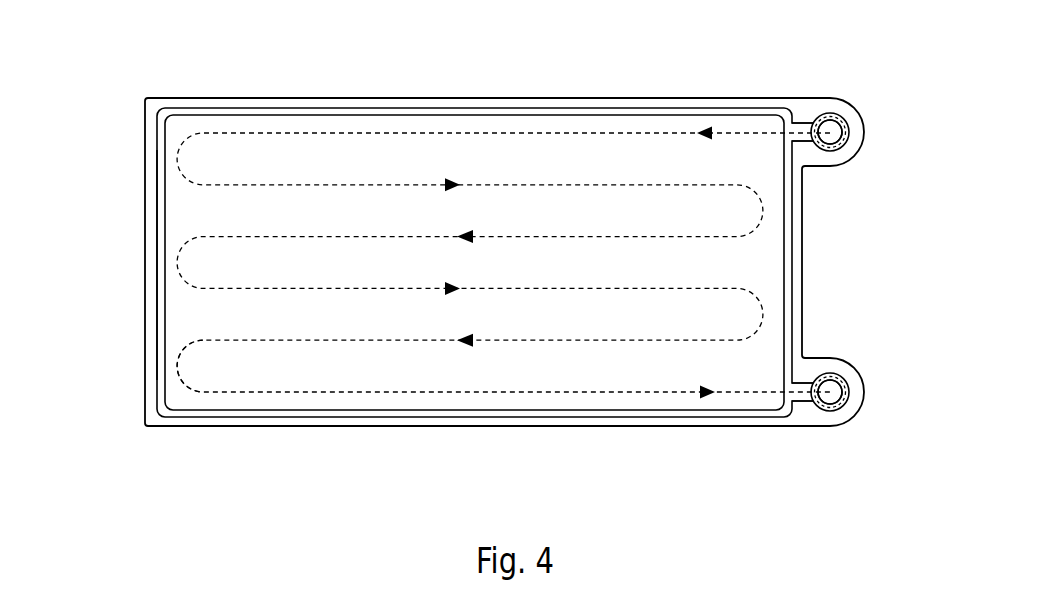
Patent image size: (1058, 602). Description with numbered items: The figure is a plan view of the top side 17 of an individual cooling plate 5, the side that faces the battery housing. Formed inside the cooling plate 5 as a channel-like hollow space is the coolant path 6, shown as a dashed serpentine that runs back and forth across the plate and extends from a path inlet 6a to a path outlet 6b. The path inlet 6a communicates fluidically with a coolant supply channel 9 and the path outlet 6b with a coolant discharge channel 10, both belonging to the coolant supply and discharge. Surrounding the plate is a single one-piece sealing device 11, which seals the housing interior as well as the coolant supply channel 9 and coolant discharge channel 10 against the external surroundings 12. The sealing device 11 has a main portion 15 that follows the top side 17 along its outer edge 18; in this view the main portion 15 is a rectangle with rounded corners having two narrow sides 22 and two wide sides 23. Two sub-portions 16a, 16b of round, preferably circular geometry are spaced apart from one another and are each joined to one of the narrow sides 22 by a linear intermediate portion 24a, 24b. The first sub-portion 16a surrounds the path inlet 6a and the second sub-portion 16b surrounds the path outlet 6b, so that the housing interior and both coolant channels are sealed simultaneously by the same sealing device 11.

The outer edge 18 is at (236, 98).
The sealing device 11 is at (468, 95).
The external surroundings 12 is at (636, 35).
The main portion 15 is at (802, 257).
The narrow sides 22 is at (157, 257).
The wide sides 23 is at (350, 110).
The coolant path 6 is at (588, 132).
The cooling plate 5 is at (486, 273).
The top side 17 is at (270, 363).
The linear intermediate portion 24a is at (797, 123).
The linear intermediate portion 24b is at (803, 401).
The first sub-portion 16a is at (842, 118).
The second sub-portion 16b is at (842, 378).
The path inlet 6a is at (842, 131).
The coolant supply channel 9 is at (830, 132).
The path outlet 6b is at (842, 391).
The coolant discharge channel 10 is at (830, 392).